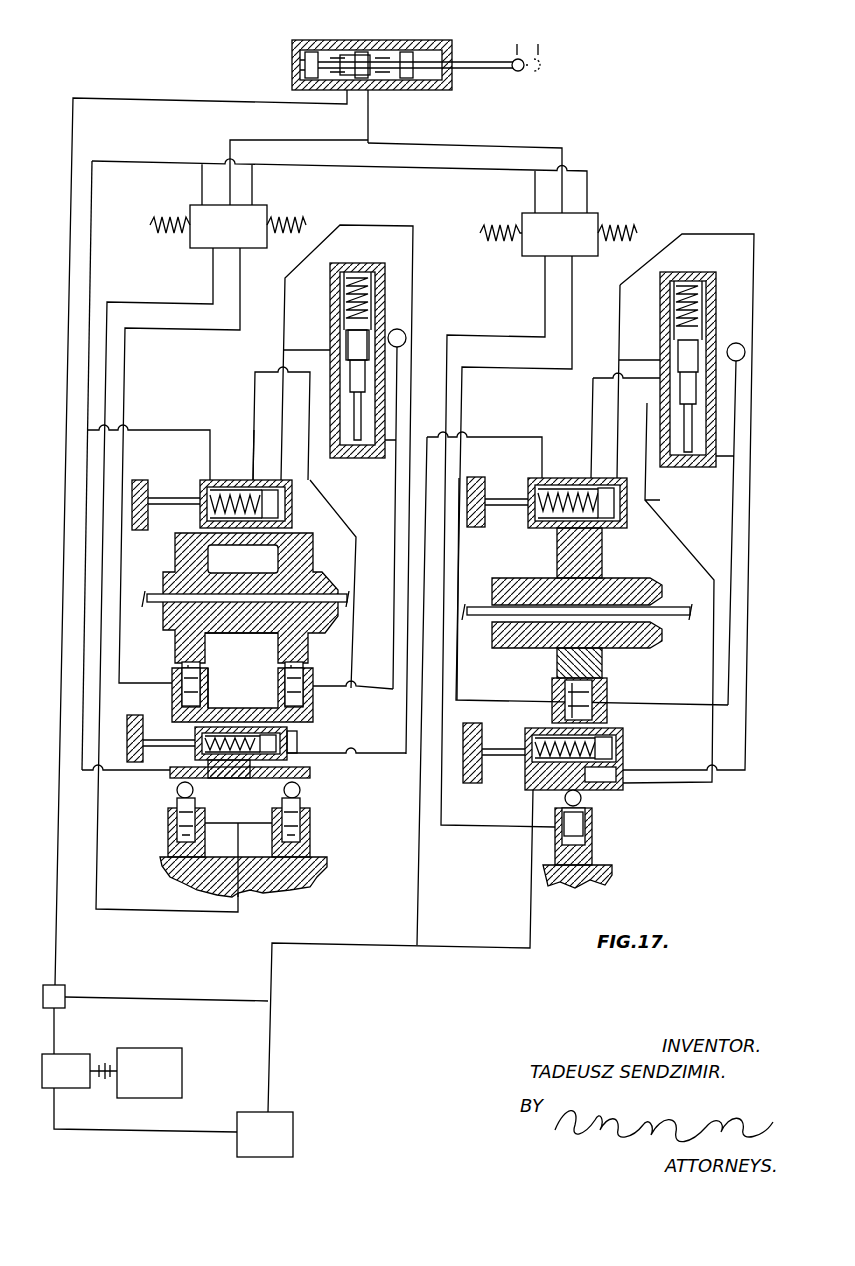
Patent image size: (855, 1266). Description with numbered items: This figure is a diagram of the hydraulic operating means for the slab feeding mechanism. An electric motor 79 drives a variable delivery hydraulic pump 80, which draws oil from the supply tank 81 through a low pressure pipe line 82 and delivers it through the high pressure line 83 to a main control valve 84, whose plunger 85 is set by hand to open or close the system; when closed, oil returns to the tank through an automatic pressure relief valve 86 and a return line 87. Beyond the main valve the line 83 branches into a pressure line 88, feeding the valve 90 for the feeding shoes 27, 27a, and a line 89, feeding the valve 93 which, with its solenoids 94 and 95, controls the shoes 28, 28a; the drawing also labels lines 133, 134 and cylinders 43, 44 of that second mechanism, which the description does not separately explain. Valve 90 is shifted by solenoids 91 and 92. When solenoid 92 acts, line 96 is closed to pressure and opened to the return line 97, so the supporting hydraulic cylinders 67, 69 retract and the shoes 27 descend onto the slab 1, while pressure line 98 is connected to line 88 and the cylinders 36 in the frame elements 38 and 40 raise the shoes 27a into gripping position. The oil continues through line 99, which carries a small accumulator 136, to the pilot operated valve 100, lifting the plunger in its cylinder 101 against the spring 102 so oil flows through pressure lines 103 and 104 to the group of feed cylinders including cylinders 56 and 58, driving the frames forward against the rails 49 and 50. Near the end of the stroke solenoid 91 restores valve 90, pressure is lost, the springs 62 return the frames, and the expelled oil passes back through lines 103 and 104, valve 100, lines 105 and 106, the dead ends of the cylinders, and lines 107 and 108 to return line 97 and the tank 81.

The main control valve 84 is at (410, 40).
The plunger 85 is at (369, 40).
The high pressure line 83 is at (161, 98).
The pressure line 88 is at (260, 143).
The line 89 is at (432, 143).
The return line 97 is at (378, 165).
The valve 90 is at (201, 248).
The solenoid 91 is at (188, 216).
The solenoid 92 is at (280, 217).
The pressure line 98 is at (241, 261).
The line 96 is at (125, 303).
The valve 93 is at (598, 213).
The solenoid 94 is at (500, 224).
The solenoid 95 is at (640, 233).
The line 133 is at (543, 276).
The line 134 is at (574, 297).
The cylinder 101 is at (330, 457).
The spring 102 is at (356, 270).
The pilot operated valve 100 is at (377, 286).
The small accumulator 136 is at (413, 312).
The pressure line 103 is at (291, 324).
The pressure line 104 is at (255, 403).
The line 105 is at (252, 432).
The line 107 is at (130, 430).
The line 106 is at (341, 522).
The line 99 is at (368, 634).
The rail 49 is at (146, 480).
The spring 62 is at (245, 480).
The cylinder 56 is at (292, 510).
The feeding shoe 27 is at (250, 565).
The feeding shoe 27a is at (218, 637).
The slab 1 is at (146, 594).
The cylinder 36 is at (180, 667).
The frame element 38 is at (312, 714).
The frame element 40 is at (171, 709).
The rail 50 is at (125, 718).
The cylinder 58 is at (289, 740).
The line 108 is at (112, 775).
The supporting hydraulic cylinder 67 is at (167, 814).
The supporting hydraulic cylinder 69 is at (310, 816).
The hydraulic cylinder 43 is at (550, 478).
The feeding shoe 28 is at (588, 580).
The feeding shoe 28a is at (602, 663).
The hydraulic cylinder 44 is at (627, 742).
The automatic pressure relief valve 86 is at (46, 985).
The return line 87 is at (158, 997).
The variable delivery hydraulic pump 80 is at (44, 1088).
The electric motor 79 is at (160, 1048).
The low pressure pipe line 82 is at (138, 1130).
The supply tank 81 is at (293, 1130).